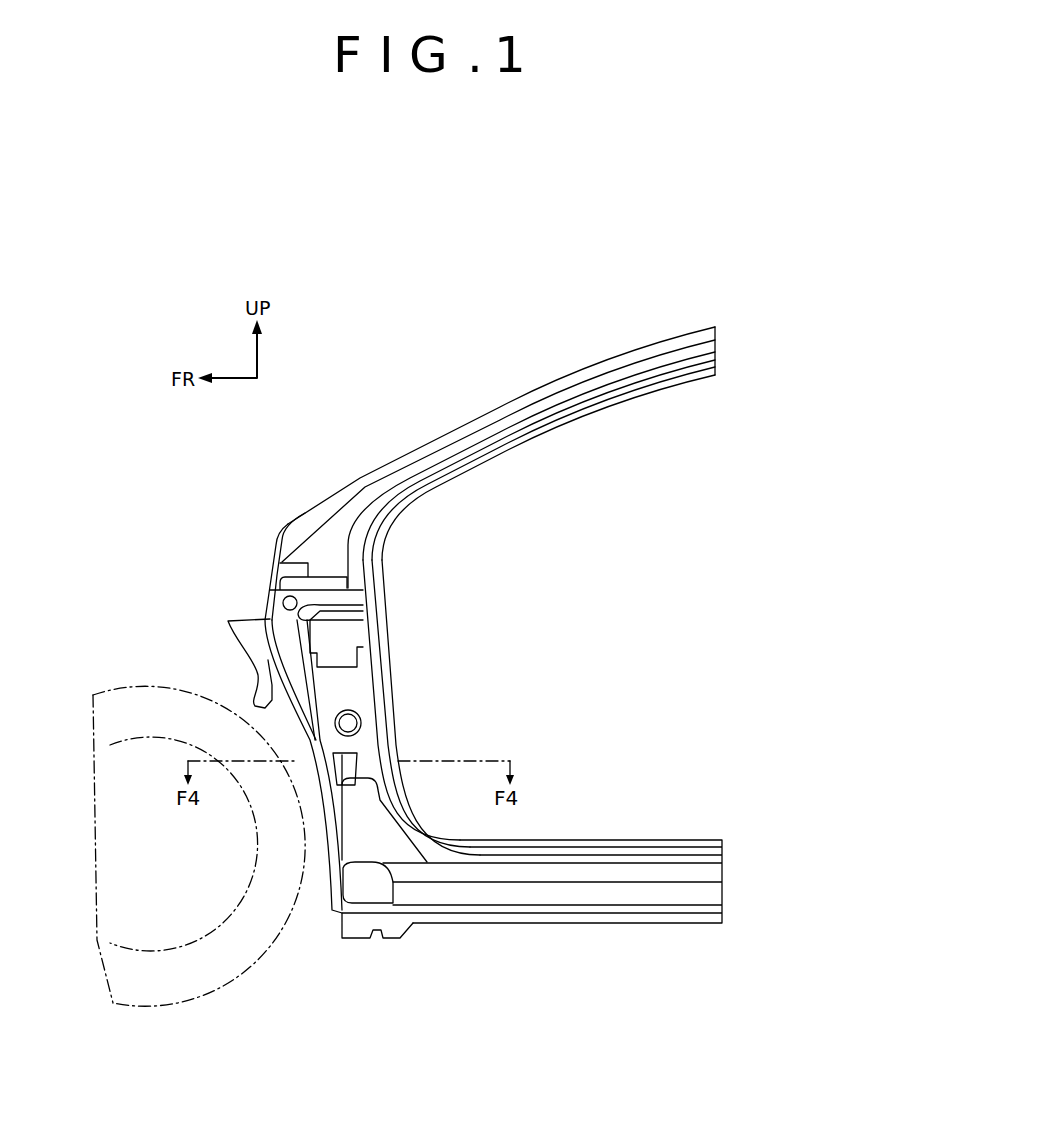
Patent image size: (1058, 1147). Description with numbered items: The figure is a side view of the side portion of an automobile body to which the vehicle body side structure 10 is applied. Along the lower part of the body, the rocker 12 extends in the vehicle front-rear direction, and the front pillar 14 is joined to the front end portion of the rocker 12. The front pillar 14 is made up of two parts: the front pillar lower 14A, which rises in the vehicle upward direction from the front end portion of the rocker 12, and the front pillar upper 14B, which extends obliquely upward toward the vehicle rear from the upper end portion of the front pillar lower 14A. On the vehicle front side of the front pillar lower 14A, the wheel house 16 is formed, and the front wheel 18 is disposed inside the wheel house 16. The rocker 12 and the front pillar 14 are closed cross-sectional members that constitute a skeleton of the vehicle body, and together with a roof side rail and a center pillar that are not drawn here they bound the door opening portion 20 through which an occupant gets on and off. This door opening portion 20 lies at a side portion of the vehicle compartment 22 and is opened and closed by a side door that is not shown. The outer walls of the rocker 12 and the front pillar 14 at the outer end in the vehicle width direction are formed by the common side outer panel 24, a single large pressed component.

The vehicle body side structure 10 is at (515, 703).
The rocker 12 is at (655, 803).
The front pillar 14 is at (403, 612).
The front pillar lower 14A is at (387, 691).
The front pillar upper 14B is at (552, 378).
The wheel house 16 is at (250, 688).
The front wheel 18 is at (150, 686).
The door opening portion 20 is at (461, 481).
The vehicle compartment 22 is at (677, 578).
The side outer panel 24 is at (328, 550).